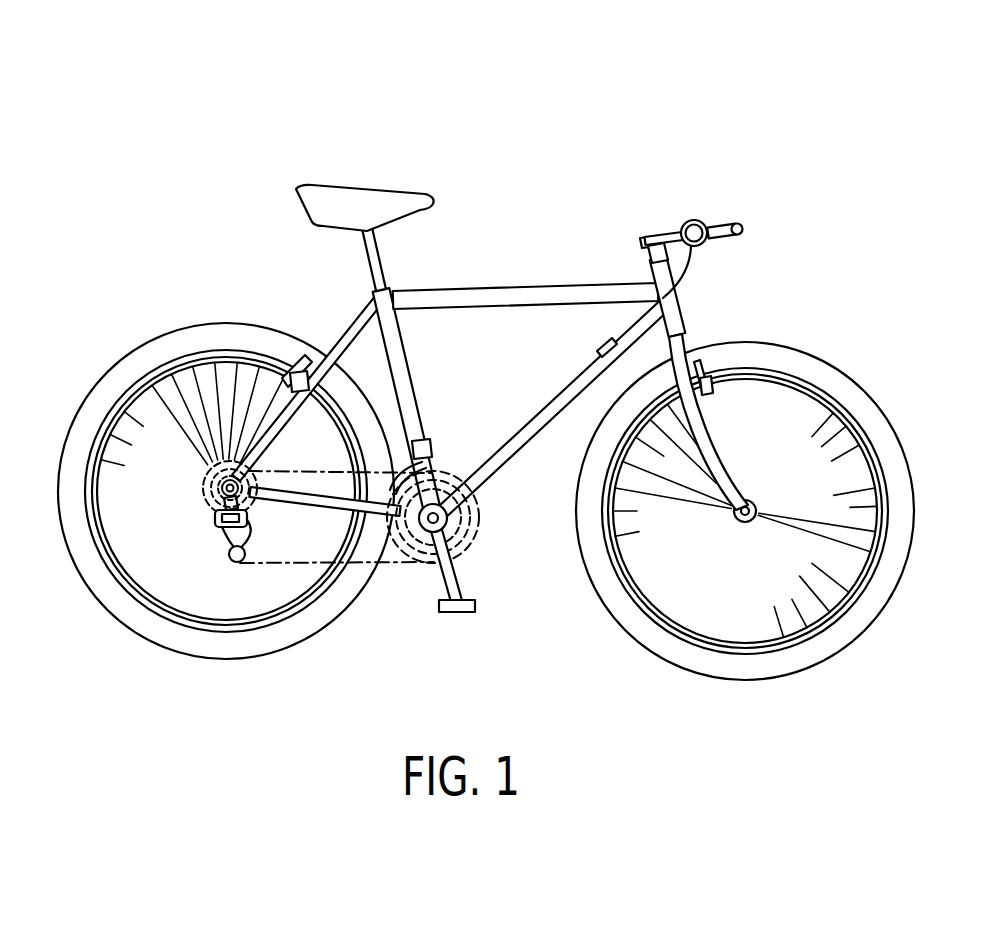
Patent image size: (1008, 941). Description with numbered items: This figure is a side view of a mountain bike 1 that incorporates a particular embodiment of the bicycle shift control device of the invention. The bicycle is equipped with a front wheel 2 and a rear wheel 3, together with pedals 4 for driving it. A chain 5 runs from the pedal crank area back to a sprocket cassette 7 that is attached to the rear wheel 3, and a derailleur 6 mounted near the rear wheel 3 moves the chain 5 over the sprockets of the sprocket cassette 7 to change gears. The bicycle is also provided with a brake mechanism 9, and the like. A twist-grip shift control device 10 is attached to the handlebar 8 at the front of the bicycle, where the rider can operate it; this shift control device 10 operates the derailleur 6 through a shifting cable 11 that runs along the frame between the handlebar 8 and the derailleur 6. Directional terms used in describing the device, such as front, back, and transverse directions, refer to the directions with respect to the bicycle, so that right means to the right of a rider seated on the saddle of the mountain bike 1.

The mountain bike 1 is at (524, 118).
The front wheel 2 is at (857, 397).
The rear wheel 3 is at (137, 360).
The pedals 4 is at (456, 612).
The chain 5 is at (299, 563).
The derailleur 6 is at (230, 555).
The sprocket cassette 7 is at (188, 500).
The handlebar 8 is at (700, 244).
The brake mechanism 9 is at (744, 216).
The twist-grip shift control device 10 is at (684, 220).
The shifting cable 11 is at (602, 350).